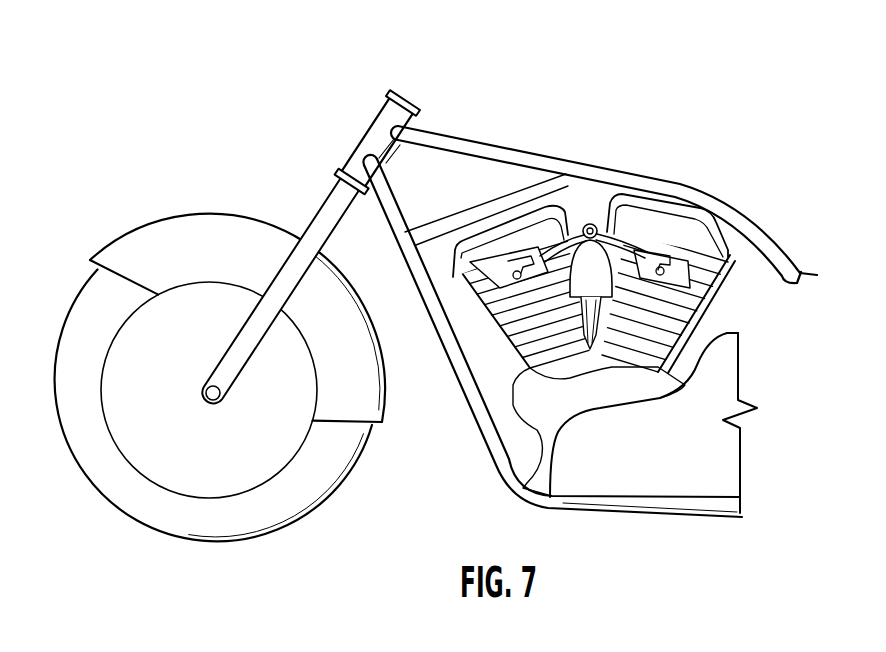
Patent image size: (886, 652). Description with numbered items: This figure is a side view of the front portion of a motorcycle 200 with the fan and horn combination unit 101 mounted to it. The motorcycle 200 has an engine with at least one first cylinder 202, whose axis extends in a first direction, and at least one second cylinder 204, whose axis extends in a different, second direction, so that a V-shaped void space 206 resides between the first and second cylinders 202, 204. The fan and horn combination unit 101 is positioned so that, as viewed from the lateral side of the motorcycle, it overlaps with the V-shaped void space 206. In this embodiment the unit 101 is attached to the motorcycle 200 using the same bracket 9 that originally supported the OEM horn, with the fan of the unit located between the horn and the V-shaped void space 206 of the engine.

The motorcycle 200 is at (436, 290).
The bracket 9 is at (594, 203).
The fan and horn combination unit 101 is at (566, 232).
The first cylinder 202 is at (497, 315).
The second cylinder 204 is at (710, 283).
The V-shaped void space 206 is at (587, 342).